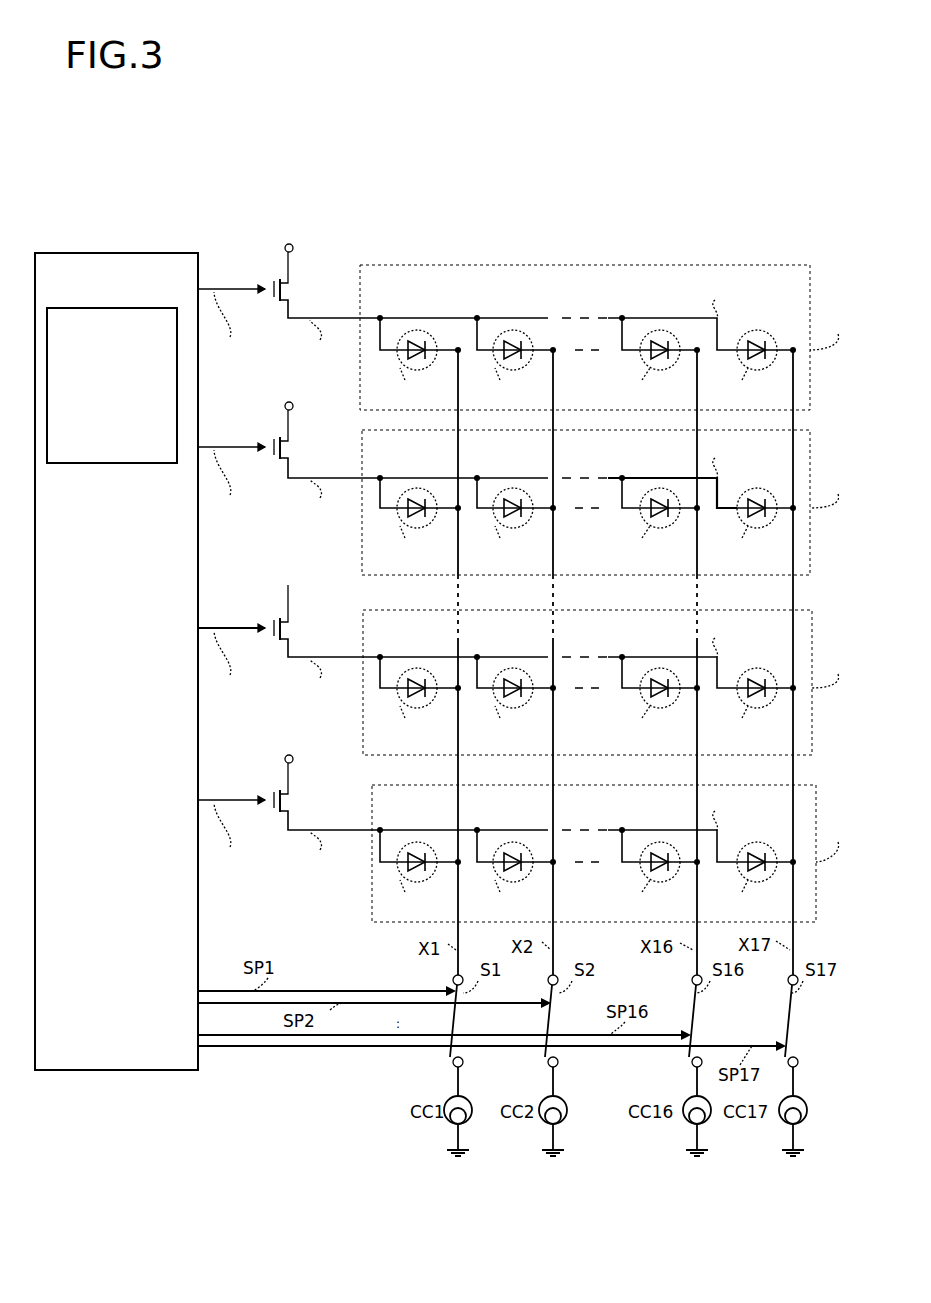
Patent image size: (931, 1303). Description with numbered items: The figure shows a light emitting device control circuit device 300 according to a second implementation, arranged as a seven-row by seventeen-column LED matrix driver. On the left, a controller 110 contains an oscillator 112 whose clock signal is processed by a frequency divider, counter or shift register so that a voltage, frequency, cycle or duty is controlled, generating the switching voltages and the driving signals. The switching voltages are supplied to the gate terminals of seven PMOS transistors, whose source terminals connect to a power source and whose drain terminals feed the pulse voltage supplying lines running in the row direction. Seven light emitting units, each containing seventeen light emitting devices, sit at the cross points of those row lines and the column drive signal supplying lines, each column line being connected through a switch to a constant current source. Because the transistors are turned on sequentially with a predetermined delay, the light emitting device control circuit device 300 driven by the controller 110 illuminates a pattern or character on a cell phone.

The controller 110 is at (56, 253).
The oscillator 112 is at (118, 308).
The light emitting device control circuit device 300 is at (518, 200).